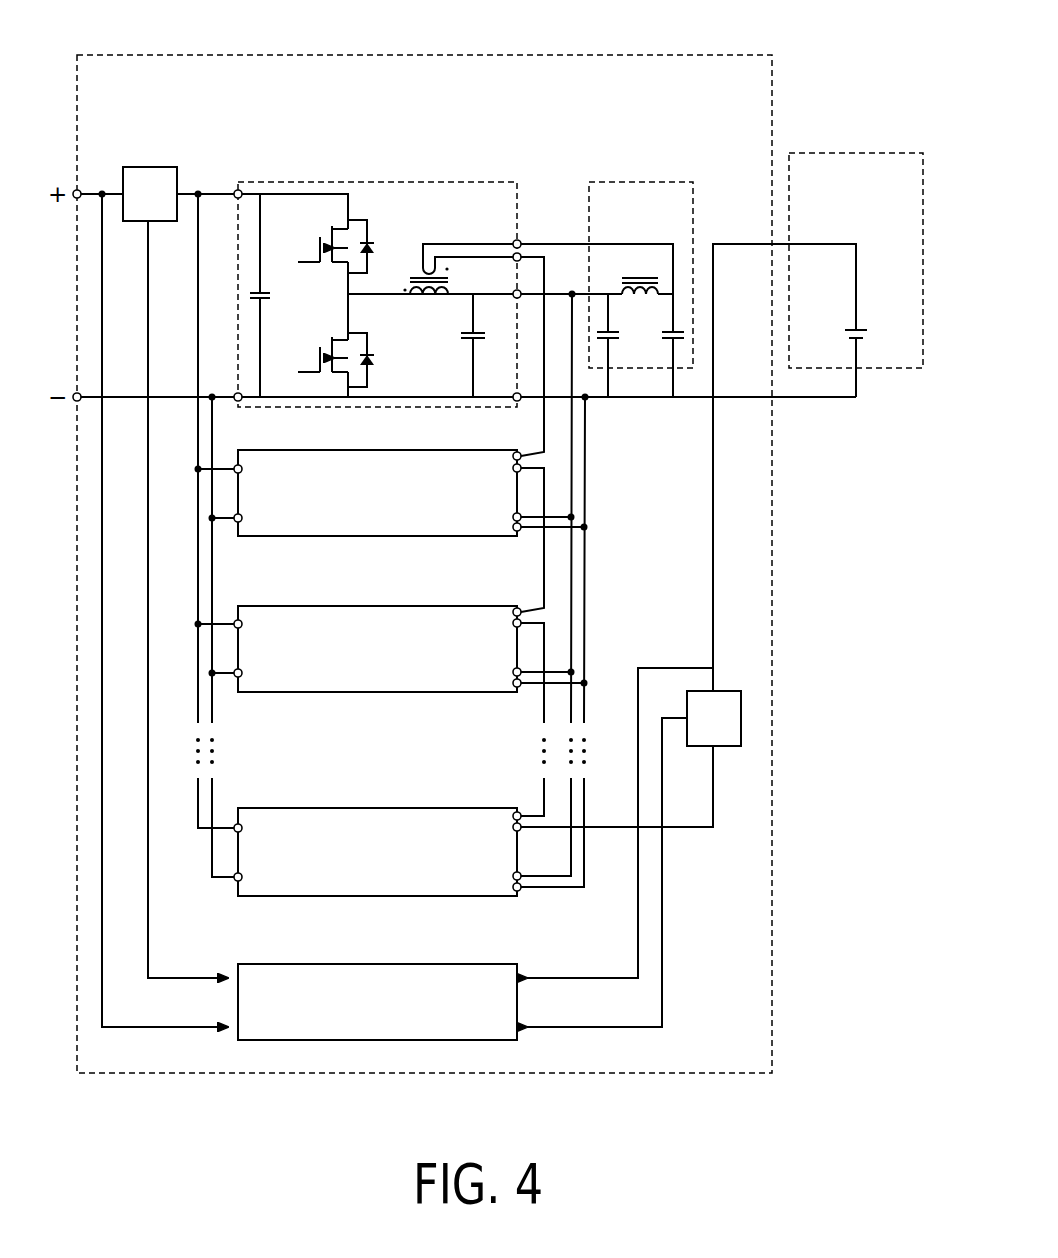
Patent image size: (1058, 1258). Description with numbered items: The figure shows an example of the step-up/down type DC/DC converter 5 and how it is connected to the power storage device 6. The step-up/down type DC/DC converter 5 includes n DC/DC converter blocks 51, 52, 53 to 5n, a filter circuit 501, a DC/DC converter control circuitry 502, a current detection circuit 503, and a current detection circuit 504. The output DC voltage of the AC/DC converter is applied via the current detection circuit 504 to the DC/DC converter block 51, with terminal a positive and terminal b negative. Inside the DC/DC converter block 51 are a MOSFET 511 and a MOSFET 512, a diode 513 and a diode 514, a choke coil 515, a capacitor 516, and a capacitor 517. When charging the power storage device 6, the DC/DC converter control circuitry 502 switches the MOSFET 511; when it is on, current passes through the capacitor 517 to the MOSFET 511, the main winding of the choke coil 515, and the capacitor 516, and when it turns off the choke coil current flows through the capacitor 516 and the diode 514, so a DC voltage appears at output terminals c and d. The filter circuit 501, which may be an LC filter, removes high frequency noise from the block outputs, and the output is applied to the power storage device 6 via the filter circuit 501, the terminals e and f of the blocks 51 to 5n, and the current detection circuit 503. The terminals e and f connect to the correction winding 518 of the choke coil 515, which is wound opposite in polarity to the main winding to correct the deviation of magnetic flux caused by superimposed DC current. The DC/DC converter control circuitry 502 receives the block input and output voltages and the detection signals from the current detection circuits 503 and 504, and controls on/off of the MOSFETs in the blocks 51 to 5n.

The step-up/down type DC/DC converter 5 is at (722, 52).
The power storage device 6 is at (868, 152).
The DC/DC converter block 51 is at (378, 271).
The DC/DC converter block 52 is at (437, 450).
The DC/DC converter block 53 is at (437, 606).
The DC/DC converter block 5n is at (437, 808).
The filter circuit 501 is at (642, 181).
The DC/DC converter control circuitry 502 is at (437, 964).
The current detection circuit 503 is at (728, 690).
The current detection circuit 504 is at (167, 166).
The MOSFET 511 is at (316, 247).
The MOSFET 512 is at (316, 365).
The diode 513 is at (368, 238).
The diode 514 is at (368, 347).
The choke coil 515 is at (428, 302).
The capacitor 516 is at (470, 351).
The capacitor 517 is at (268, 287).
The correction winding 518 is at (418, 268).